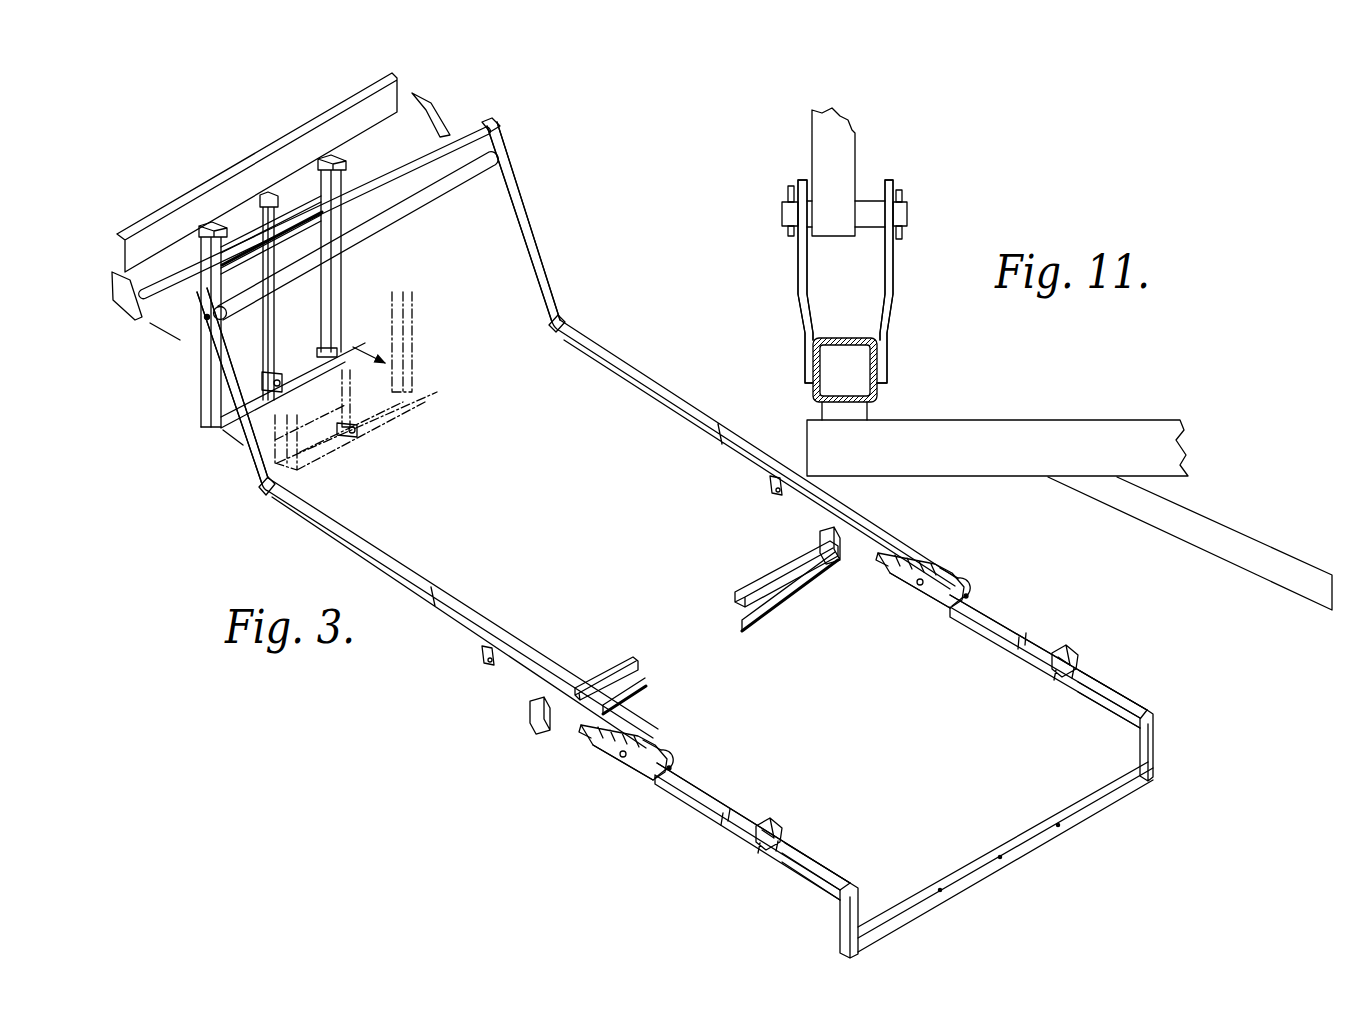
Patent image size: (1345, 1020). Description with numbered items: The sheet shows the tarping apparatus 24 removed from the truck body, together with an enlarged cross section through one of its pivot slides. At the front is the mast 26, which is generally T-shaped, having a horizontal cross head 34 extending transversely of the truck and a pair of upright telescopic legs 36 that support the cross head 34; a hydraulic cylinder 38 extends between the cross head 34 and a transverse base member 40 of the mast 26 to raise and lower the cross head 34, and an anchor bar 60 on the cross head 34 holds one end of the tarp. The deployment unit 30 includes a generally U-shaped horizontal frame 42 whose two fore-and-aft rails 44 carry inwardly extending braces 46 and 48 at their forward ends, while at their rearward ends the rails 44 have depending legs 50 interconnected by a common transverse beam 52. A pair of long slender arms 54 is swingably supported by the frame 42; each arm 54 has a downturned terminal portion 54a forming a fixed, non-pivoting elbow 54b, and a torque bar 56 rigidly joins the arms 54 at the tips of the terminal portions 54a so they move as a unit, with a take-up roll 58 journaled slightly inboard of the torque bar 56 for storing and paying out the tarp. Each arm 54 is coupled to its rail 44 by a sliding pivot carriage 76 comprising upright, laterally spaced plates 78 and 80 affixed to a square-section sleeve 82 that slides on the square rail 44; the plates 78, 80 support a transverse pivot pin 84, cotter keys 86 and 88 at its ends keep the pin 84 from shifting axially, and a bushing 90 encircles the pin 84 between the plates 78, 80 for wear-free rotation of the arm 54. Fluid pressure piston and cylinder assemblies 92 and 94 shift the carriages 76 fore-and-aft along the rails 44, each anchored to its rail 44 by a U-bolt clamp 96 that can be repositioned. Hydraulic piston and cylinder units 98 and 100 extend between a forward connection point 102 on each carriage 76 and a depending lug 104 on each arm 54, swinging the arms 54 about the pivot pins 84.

In FIG. 3, the rack assembly 24 is at (577, 200).
In FIG. 3, the mast 26 is at (197, 397).
In FIG. 3, the deployment unit 30 is at (873, 516).
In FIG. 3, the cross head 34 is at (165, 258).
In FIG. 3, the upright legs 36 is at (335, 296).
In FIG. 3, the hydraulic cylinder 38 is at (274, 323).
In FIG. 3, the base member 40 is at (255, 393).
In FIG. 3, the frame 42 is at (1137, 692).
In FIG. 3, the rails 44 is at (1107, 692).
In FIG. 3, the brace 46 is at (763, 583).
In FIG. 3, the brace 48 is at (755, 624).
In FIG. 3, the depending legs 50 is at (1152, 747).
In FIG. 3, the transverse beam 52 is at (987, 873).
In FIG. 3, the arms 54 is at (672, 388).
In FIG. 11, the arms 54 is at (850, 158).
In FIG. 3, the downturned terminal portion 54a is at (540, 277).
In FIG. 3, the elbow 54b is at (550, 330).
In FIG. 3, the torque bar 56 is at (467, 142).
In FIG. 3, the take-up roll 58 is at (440, 203).
In FIG. 3, the anchor bar 60 is at (158, 283).
In FIG. 3, the sliding pivot carriage 76 is at (940, 552).
In FIG. 11, the sliding pivot carriage 76 is at (900, 290).
In FIG. 3, the plate 78 is at (937, 605).
In FIG. 11, the plate 78 is at (798, 288).
In FIG. 3, the plate 80 is at (947, 560).
In FIG. 11, the plate 80 is at (888, 309).
In FIG. 3, the sleeve 82 is at (1000, 642).
In FIG. 11, the sleeve 82 is at (878, 392).
In FIG. 3, the pivot pin 84 is at (923, 597).
In FIG. 11, the pivot pin 84 is at (907, 212).
In FIG. 11, the cotter key 86 is at (788, 192).
In FIG. 11, the cotter key 88 is at (902, 192).
In FIG. 11, the bushing 90 is at (866, 225).
In FIG. 3, the piston and cylinder assembly 92 is at (720, 797).
In FIG. 3, the piston and cylinder assembly 94 is at (1018, 627).
In FIG. 3, the U-bolt clamp 96 is at (1076, 660).
In FIG. 3, the hydraulic piston and cylinder unit 98 is at (507, 670).
In FIG. 3, the hydraulic piston and cylinder unit 100 is at (808, 508).
In FIG. 3, the forward connection point 102 is at (877, 562).
In FIG. 3, the depending lug 104 is at (773, 483).